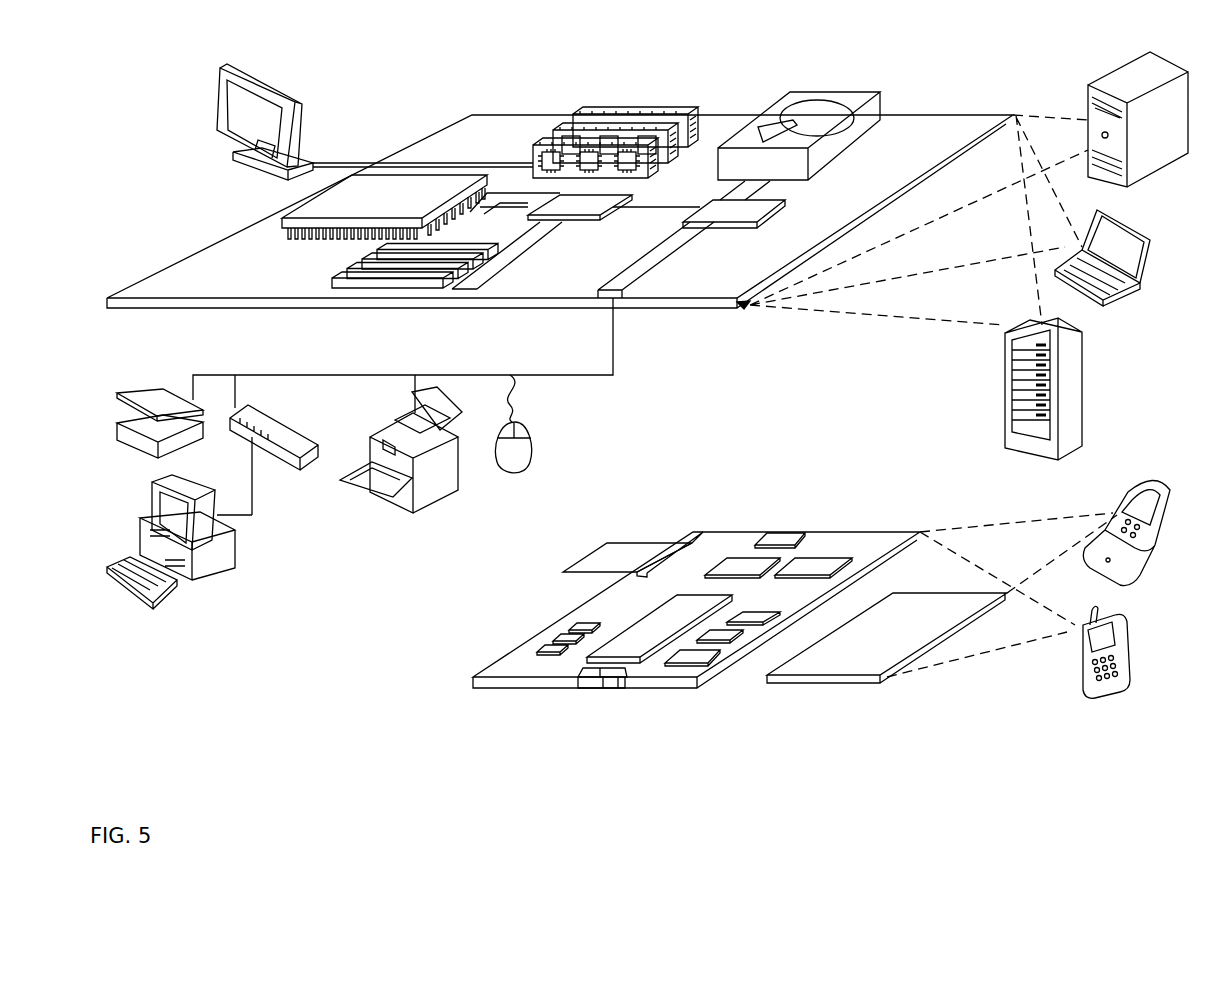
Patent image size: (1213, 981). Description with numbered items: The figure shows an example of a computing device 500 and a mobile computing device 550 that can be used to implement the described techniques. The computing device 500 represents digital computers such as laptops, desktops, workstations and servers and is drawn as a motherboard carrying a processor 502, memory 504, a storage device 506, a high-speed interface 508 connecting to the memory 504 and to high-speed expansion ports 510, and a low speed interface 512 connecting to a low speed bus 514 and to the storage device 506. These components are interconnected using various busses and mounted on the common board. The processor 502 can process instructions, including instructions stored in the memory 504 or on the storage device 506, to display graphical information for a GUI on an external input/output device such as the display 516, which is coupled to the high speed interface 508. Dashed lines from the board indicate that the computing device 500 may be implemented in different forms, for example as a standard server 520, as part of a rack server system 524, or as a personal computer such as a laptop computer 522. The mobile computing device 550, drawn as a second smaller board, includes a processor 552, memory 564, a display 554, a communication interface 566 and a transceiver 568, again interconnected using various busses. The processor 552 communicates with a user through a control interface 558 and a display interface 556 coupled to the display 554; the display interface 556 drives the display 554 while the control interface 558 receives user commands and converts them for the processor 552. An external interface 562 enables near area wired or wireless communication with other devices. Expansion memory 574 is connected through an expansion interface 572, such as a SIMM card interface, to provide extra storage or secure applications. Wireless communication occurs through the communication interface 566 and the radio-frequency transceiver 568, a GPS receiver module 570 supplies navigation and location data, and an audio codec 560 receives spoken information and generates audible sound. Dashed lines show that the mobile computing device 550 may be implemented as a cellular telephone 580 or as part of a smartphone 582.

The computing device 500 is at (396, 85).
The processor 502 is at (290, 222).
The memory 504 is at (590, 106).
The storage device 506 is at (795, 100).
The high-speed interface 508 is at (556, 206).
The high-speed expansion ports 510 is at (353, 273).
The low speed interface 512 is at (712, 205).
The low speed bus 514 is at (622, 298).
The display 516 is at (218, 66).
The standard server 520 is at (1090, 102).
The laptop computer 522 is at (1147, 237).
The rack server system 524 is at (1007, 413).
The mobile computing device 550 is at (446, 690).
The processor 552 is at (633, 648).
The display 554 is at (850, 666).
The display interface 556 is at (697, 660).
The control interface 558 is at (727, 635).
The audio codec 560 is at (752, 620).
The external interface 562 is at (603, 672).
The memory 564 is at (557, 650).
The communication interface 566 is at (745, 565).
The transceiver 568 is at (813, 565).
The GPS receiver module 570 is at (788, 532).
The expansion interface 572 is at (678, 542).
The expansion memory 574 is at (613, 543).
The cellular telephone 580 is at (1130, 492).
The smartphone 582 is at (1078, 652).